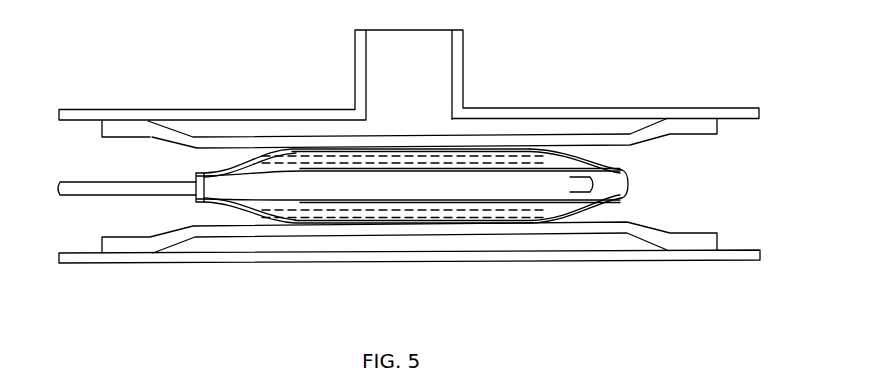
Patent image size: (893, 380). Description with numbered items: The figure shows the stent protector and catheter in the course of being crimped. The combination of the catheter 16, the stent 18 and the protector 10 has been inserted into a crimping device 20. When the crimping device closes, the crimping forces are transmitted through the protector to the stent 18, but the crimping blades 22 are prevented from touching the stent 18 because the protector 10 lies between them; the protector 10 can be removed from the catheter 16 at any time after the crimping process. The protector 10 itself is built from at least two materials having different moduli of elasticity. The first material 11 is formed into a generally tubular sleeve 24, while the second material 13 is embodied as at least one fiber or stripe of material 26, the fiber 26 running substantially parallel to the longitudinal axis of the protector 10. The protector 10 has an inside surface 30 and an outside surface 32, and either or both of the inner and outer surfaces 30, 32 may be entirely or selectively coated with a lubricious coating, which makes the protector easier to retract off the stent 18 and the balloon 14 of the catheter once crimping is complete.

The protector 10 is at (391, 194).
The first material 11 is at (275, 158).
The second material 13 is at (299, 205).
The balloon 14 is at (320, 167).
The catheter 16 is at (90, 197).
The stent 18 is at (323, 216).
The crimping device 20 is at (512, 108).
The crimping blades 22 is at (690, 233).
The tubular sleeve 24 is at (583, 203).
The fiber 26 is at (422, 205).
The inside surface 30 is at (197, 175).
The outside surface 32 is at (628, 178).